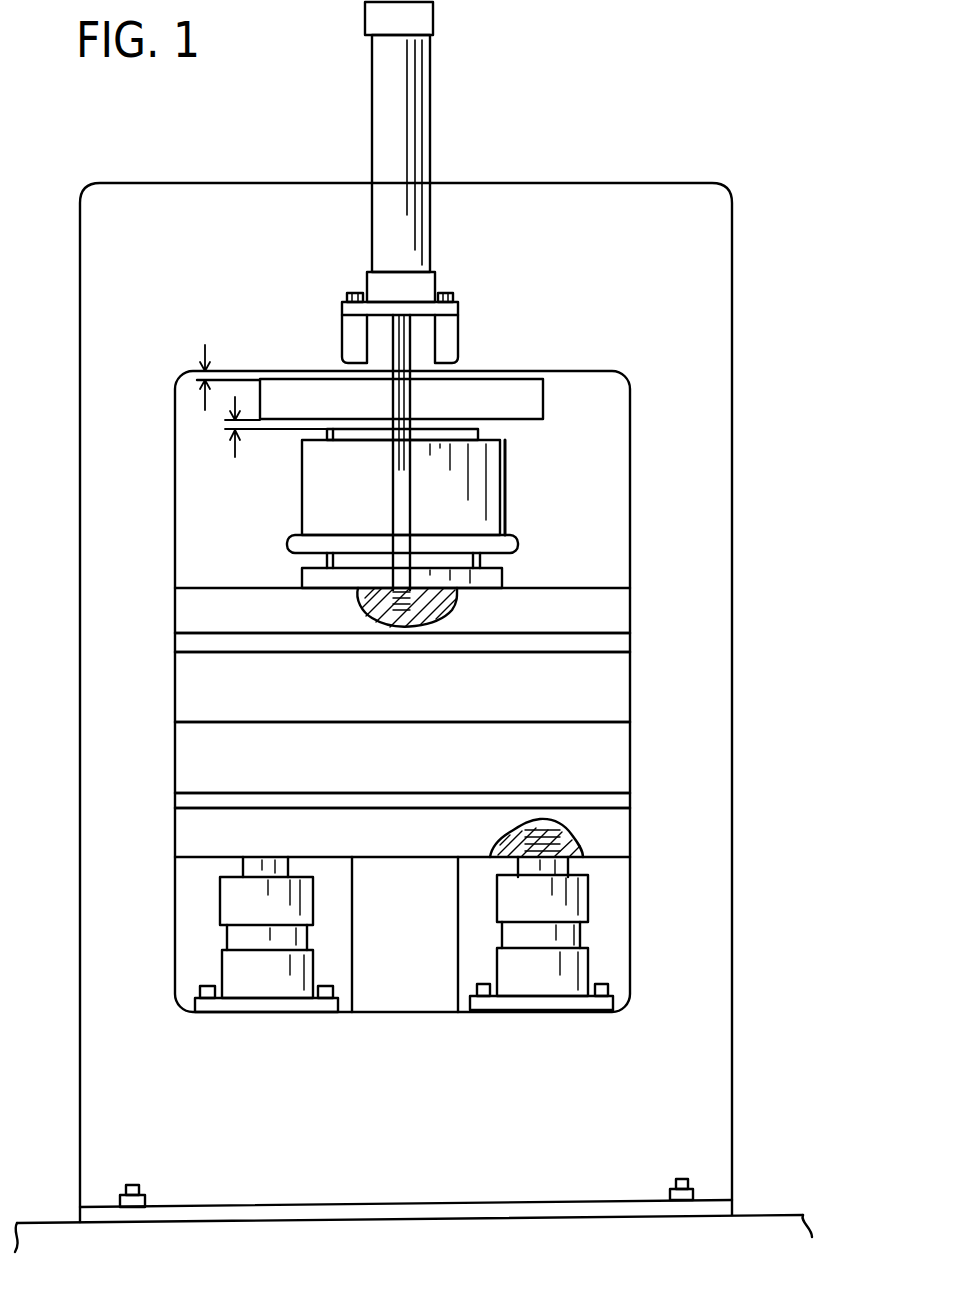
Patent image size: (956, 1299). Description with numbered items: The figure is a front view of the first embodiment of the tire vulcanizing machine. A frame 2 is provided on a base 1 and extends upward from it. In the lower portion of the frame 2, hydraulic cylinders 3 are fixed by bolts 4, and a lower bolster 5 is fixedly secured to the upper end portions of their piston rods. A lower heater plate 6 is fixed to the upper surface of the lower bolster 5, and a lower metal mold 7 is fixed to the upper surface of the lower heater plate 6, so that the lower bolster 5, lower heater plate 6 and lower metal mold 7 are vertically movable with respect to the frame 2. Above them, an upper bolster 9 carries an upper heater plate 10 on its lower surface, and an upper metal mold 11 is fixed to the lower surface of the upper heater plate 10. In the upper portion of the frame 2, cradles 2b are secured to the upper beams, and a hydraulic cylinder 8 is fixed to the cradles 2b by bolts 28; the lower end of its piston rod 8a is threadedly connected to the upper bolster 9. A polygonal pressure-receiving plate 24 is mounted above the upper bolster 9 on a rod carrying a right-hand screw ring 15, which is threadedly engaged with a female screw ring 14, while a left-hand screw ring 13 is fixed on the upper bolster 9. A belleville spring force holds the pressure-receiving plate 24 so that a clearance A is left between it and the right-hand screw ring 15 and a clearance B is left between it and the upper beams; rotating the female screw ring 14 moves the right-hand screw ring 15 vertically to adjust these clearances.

The base 1 is at (700, 1207).
The frame 2 is at (732, 1013).
The cradles 2b is at (455, 330).
The hydraulic cylinders 3 is at (222, 895).
The bolts 4 is at (603, 987).
The lower bolster 5 is at (613, 829).
The lower heater plate 6 is at (622, 800).
The lower metal mold 7 is at (614, 757).
The hydraulic cylinders 8 is at (428, 16).
The piston rods 8a is at (393, 478).
The upper bolster 9 is at (622, 598).
The upper heater plate 10 is at (622, 643).
The upper metal mold 11 is at (618, 692).
The left-hand screw ring 13 is at (503, 577).
The female screw ring 14 is at (503, 505).
The right-hand screw ring 15 is at (480, 430).
The pressure-receiving plate 24 is at (543, 390).
The bolts 28 is at (445, 292).
The clearance A is at (228, 427).
The clearance B is at (195, 375).